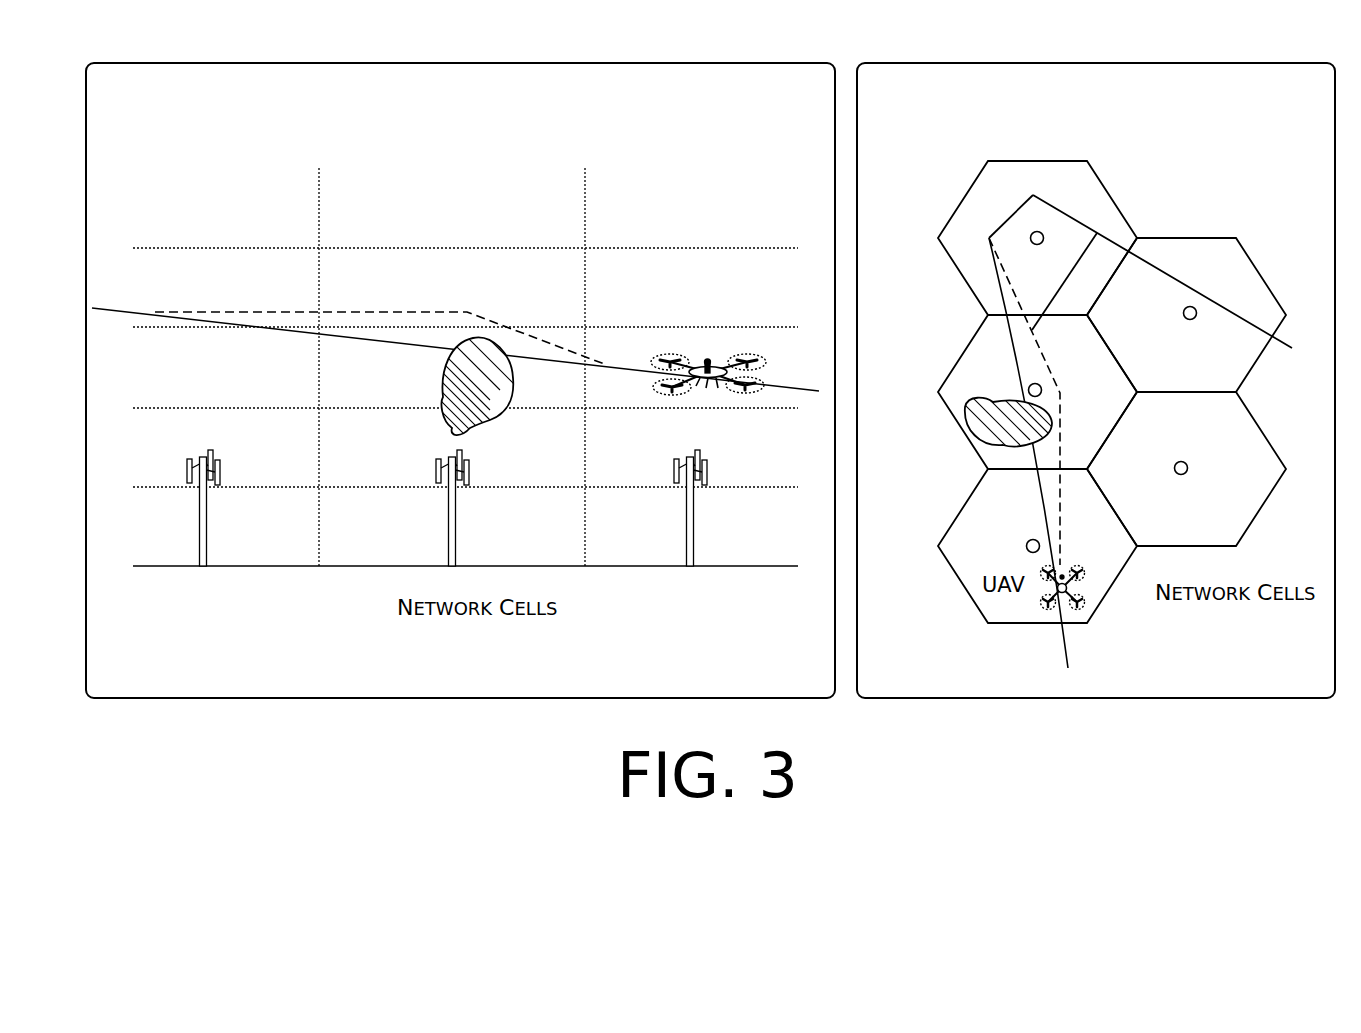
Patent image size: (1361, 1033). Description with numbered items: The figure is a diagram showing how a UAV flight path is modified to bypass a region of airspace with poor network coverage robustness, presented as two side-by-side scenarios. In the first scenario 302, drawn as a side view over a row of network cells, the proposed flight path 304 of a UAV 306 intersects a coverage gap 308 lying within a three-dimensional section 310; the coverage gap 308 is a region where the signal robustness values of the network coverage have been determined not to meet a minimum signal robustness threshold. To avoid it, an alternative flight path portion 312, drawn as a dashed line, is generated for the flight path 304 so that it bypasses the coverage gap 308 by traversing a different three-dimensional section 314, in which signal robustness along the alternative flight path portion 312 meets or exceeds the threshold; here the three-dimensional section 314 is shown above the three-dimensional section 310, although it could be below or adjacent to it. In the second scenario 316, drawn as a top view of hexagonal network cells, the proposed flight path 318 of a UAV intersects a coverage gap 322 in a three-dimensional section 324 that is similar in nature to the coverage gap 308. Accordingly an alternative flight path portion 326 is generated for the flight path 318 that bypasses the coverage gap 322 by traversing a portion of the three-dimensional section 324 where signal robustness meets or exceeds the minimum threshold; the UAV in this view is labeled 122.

The scenario 302 is at (137, 63).
The flight path 304 is at (617, 368).
The UAV 306 is at (718, 367).
The coverage gap 308 is at (458, 343).
The 3-dimensional section 310 is at (333, 378).
The alternative flight path portion 312 is at (543, 342).
The 3-dimensional section 314 is at (537, 268).
The scenario 316 is at (910, 63).
The flight path 318 is at (1160, 270).
The coverage gap 322 is at (977, 398).
The 3-dimensional section 324 is at (972, 340).
The alternative flight path portion 326 is at (1097, 233).
The UAV 122 is at (1080, 582).